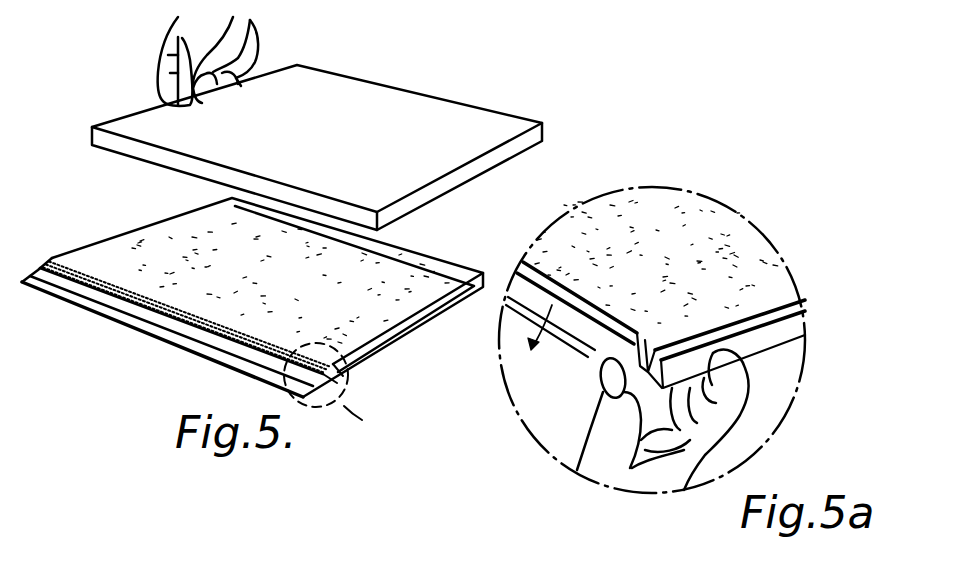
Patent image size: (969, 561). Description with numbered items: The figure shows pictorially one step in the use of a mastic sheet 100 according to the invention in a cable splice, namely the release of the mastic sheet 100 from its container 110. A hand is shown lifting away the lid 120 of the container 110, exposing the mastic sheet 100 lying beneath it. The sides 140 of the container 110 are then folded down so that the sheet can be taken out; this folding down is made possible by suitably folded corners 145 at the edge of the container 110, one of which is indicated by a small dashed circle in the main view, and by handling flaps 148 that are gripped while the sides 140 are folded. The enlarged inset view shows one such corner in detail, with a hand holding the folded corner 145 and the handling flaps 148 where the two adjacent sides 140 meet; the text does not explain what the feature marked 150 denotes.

In FIG. 5, the container 110 is at (118, 96).
In FIG. 5, the lid 120 is at (330, 88).
In FIG. 5, the mastic sheet 100 is at (279, 281).
In FIG. 5, the sides 140 is at (173, 333).
In FIG. 5A, the sides 140 is at (590, 350).
In FIG. 5, the folded corners 145 is at (344, 383).
In FIG. 5A, the folded corners 145 is at (603, 408).
In FIG. 5A, the handling flaps 148 is at (522, 282).
In FIG. 5A, the corner edge 150 is at (563, 277).